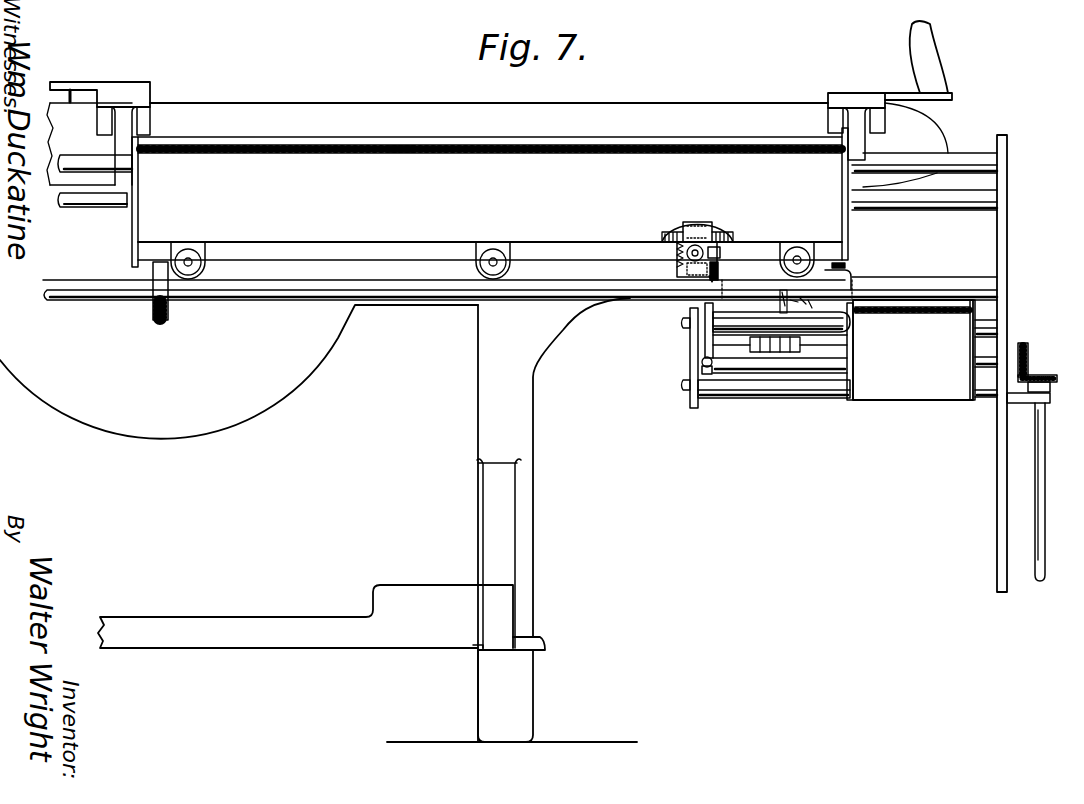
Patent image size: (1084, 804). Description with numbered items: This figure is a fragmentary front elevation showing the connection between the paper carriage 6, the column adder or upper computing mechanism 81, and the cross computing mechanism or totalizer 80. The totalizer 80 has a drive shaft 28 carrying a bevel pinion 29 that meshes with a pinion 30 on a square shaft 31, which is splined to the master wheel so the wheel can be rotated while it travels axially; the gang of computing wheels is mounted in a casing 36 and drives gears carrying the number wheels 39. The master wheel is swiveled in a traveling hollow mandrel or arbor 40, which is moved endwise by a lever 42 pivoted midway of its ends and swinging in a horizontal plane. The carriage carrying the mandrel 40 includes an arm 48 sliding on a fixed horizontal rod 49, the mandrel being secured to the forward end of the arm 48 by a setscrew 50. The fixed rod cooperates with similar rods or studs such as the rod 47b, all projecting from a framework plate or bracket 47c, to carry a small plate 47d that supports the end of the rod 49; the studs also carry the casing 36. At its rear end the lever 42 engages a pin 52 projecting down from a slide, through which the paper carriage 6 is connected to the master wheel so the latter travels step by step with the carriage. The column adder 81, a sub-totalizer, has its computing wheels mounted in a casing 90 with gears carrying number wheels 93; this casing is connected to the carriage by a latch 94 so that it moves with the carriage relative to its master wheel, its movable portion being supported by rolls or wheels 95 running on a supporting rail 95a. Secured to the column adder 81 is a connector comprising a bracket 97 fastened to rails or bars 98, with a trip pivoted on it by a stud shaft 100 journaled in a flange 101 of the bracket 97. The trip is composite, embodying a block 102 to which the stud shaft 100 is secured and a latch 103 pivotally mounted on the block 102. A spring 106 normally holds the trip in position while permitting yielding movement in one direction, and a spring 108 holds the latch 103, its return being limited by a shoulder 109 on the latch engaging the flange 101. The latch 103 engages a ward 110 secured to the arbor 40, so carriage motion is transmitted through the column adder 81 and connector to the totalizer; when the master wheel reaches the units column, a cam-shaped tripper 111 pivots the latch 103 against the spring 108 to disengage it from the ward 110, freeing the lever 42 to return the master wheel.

The paper carriage 6 is at (683, 103).
The drive shaft 28 is at (1038, 430).
The bevel pinion 29 is at (1037, 378).
The pinion 30 is at (1024, 352).
The square shaft 31 is at (985, 356).
The casing 36 is at (945, 400).
The number wheels 39 is at (903, 314).
The hollow mandrel or arbor 40 is at (843, 357).
The lever 42 is at (848, 268).
The rod or stud 47b is at (762, 398).
The framework plate or bracket 47c is at (1000, 537).
The small plate 47d is at (690, 406).
The arm 48 is at (705, 346).
The fixed horizontal rod 49 is at (725, 322).
The setscrew 50 is at (705, 366).
The pin 52 is at (842, 264).
The cross computing mechanism or totalizer 80 is at (911, 350).
The column adder or upper computing mechanism 81 is at (490, 197).
The casing 90 is at (590, 137).
The number wheels 93 is at (411, 155).
The latch 94 is at (118, 136).
The rolls or wheels 95 is at (205, 264).
The supporting rail 95a is at (213, 300).
The bracket 97 is at (692, 230).
The rails or bars 98 is at (682, 230).
The stud shaft 100 is at (698, 256).
The flange 101 is at (741, 233).
The block 102 is at (687, 268).
The latch 103 is at (712, 280).
The spring 106 is at (678, 256).
The spring 108 is at (714, 262).
The shoulder 109 is at (718, 249).
The ward 110 is at (722, 293).
The tripper 111 is at (853, 287).